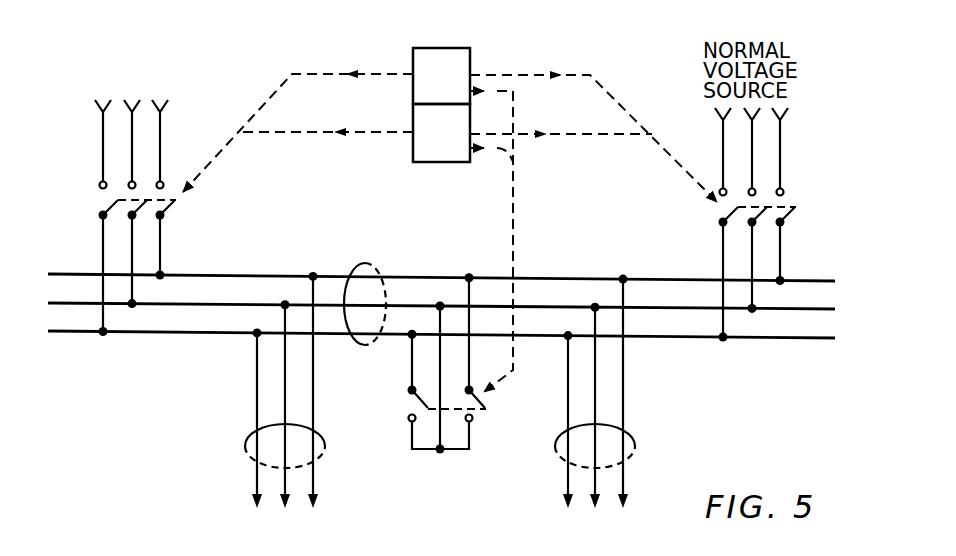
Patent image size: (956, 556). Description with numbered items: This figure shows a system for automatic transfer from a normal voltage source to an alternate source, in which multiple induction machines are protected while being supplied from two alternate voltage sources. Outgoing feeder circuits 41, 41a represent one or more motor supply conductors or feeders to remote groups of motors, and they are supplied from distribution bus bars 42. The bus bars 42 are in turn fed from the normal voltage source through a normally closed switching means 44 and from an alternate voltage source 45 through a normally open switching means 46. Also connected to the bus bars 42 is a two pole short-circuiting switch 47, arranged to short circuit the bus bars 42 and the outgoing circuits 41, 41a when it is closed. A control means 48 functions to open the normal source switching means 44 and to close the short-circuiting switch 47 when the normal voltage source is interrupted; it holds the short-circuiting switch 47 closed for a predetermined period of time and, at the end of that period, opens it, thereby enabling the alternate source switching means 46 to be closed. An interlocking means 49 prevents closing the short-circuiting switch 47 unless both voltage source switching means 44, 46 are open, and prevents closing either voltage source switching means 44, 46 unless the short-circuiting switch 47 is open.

The outgoing feeder circuit 41 is at (325, 443).
The outgoing feeder circuit 41a is at (634, 441).
The distribution bus bars 42 is at (358, 265).
The normally closed switching means 44 is at (790, 215).
The alternate voltage source 45 is at (143, 95).
The normally open switching means 46 is at (102, 201).
The two pole short-circuiting switch 47 is at (410, 403).
The control means 48 is at (445, 133).
The interlocking means 49 is at (450, 220).